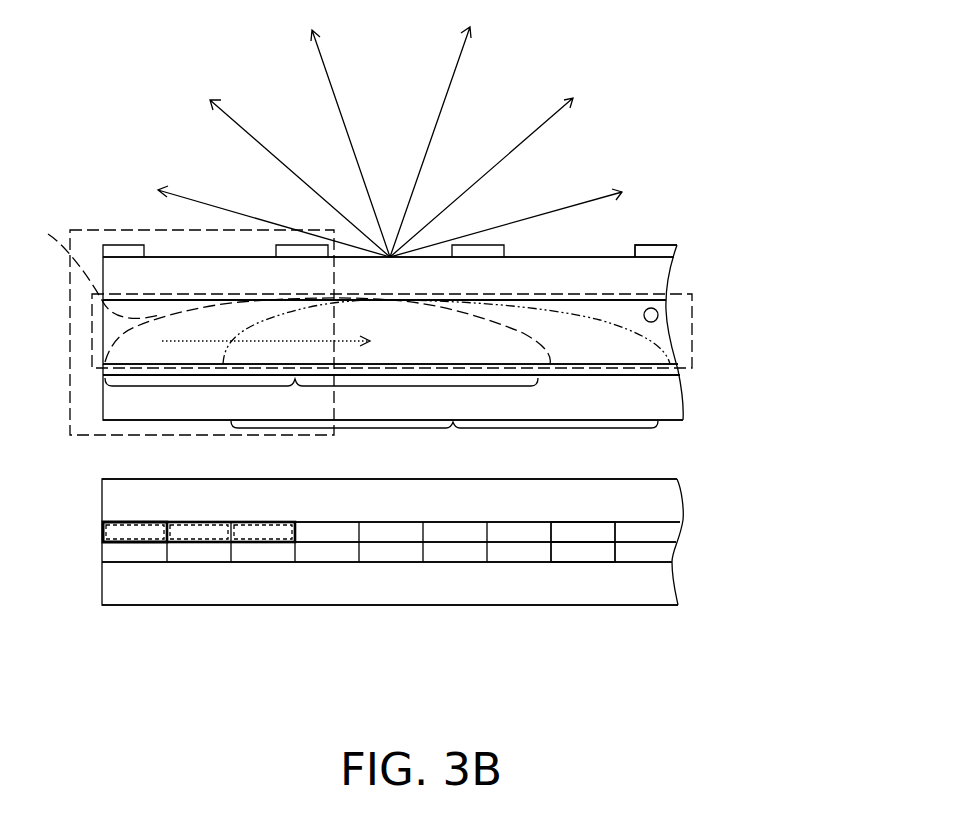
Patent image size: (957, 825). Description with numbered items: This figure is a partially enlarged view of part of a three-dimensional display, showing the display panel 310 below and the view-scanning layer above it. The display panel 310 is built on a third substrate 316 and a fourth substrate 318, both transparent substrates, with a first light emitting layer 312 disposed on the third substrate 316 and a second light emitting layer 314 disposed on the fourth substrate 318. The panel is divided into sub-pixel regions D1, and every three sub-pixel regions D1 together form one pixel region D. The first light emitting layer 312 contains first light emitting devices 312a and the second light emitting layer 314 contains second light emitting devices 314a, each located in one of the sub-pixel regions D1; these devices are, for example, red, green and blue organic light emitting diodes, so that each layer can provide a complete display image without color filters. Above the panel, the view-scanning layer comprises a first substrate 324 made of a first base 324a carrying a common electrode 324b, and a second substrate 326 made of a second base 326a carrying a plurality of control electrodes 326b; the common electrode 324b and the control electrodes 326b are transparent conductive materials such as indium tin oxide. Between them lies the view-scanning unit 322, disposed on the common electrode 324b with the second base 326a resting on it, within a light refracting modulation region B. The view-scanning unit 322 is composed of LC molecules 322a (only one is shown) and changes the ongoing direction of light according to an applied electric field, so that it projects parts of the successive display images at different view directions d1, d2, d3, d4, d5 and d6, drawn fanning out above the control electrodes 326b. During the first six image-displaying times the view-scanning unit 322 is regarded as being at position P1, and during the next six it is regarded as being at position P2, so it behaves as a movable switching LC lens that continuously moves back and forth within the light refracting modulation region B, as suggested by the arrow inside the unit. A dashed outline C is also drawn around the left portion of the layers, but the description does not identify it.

The display panel 310 is at (775, 490).
The first light emitting layer 312 is at (667, 553).
The first light emitting device 312a is at (585, 553).
The second light emitting layer 314 is at (672, 530).
The second light emitting device 314a is at (585, 530).
The third substrate 316 is at (667, 573).
The fourth substrate 318 is at (675, 512).
The view-scanning unit 322 is at (735, 341).
The LC molecule 322a is at (658, 315).
The first substrate 324 is at (787, 365).
The first base 324a is at (667, 402).
The common electrode 324b is at (652, 367).
The second substrate 326 is at (787, 185).
The second base 326a is at (653, 270).
The control electrode 326b is at (663, 253).
The region C is at (70, 297).
The light refracting modulation region B is at (92, 322).
The position P1 is at (321, 398).
The position P2 is at (444, 448).
The pixel region D is at (253, 545).
The sub-pixel region D1 is at (122, 545).
The view direction d1 is at (523, 216).
The view direction d2 is at (497, 171).
The view direction d3 is at (442, 133).
The view direction d4 is at (347, 129).
The view direction d5 is at (287, 168).
The view direction d6 is at (264, 215).